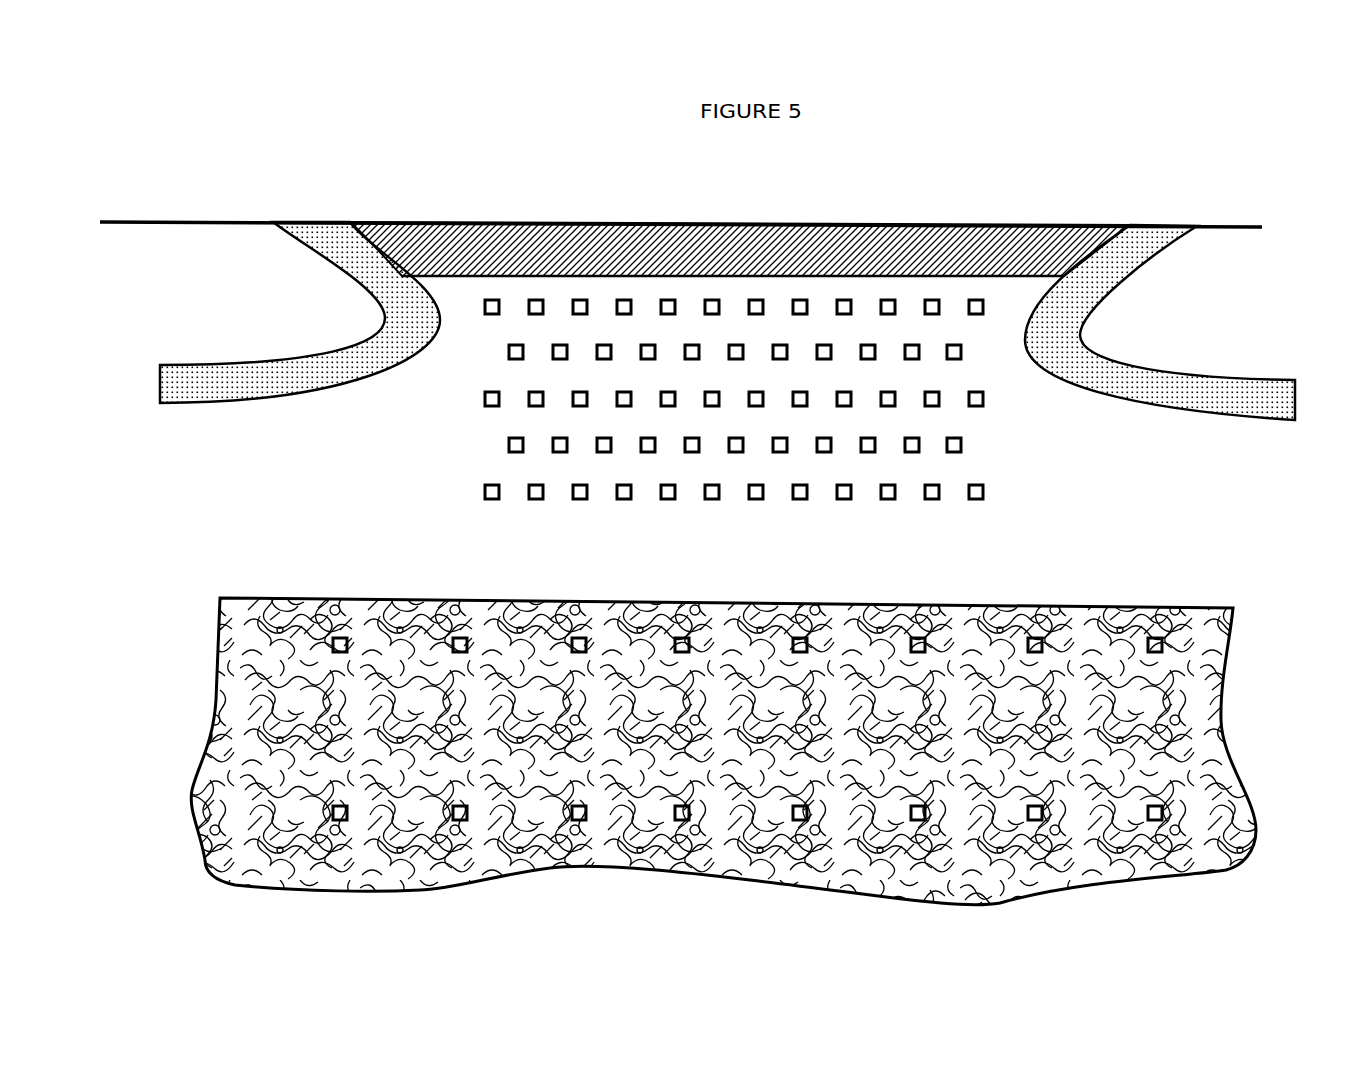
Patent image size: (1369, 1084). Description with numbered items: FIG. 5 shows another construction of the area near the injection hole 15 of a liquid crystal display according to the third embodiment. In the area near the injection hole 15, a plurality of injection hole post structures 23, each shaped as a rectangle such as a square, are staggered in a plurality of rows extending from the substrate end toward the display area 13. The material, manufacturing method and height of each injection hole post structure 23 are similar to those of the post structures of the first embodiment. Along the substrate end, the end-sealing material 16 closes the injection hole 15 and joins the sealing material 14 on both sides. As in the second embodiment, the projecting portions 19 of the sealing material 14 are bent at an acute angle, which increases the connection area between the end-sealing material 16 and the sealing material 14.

The display area 13 is at (1017, 608).
The sealing material 14 is at (287, 402).
The injection hole 15 is at (852, 200).
The end-sealing material 16 is at (652, 223).
The projecting portion 19 is at (295, 257).
The injection hole post structure 23 is at (985, 401).